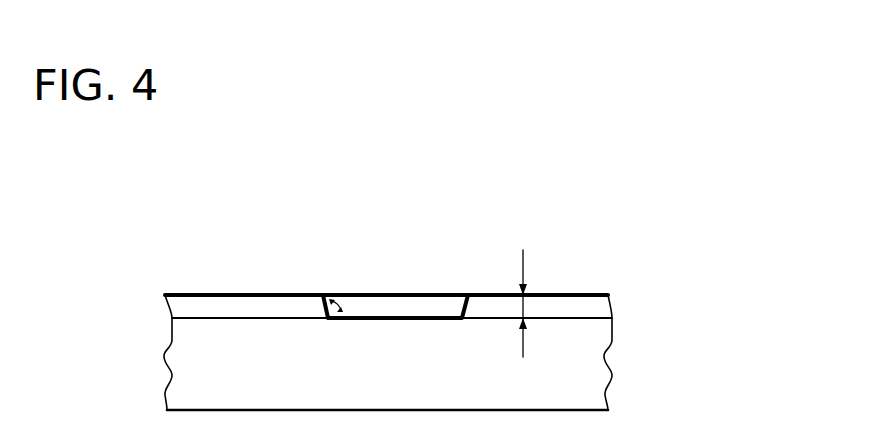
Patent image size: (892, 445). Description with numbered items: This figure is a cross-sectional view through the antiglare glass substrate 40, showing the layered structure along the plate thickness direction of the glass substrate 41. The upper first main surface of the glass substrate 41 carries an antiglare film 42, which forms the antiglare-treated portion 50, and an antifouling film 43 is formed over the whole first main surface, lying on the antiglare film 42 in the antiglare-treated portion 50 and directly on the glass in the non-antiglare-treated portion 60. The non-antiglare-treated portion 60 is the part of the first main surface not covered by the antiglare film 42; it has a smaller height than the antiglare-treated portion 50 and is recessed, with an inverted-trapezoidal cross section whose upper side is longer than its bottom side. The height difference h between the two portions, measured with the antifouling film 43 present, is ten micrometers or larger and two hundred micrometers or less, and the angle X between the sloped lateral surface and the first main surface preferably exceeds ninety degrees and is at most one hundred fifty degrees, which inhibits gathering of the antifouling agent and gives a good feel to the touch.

The antiglare glass substrate 40 is at (498, 205).
The glass substrate 41 is at (592, 373).
The antiglare film 42 is at (592, 308).
The antifouling film 43 is at (602, 293).
The antiglare-treated portion 50 is at (578, 294).
The non-antiglare-treated portion 60 is at (395, 313).